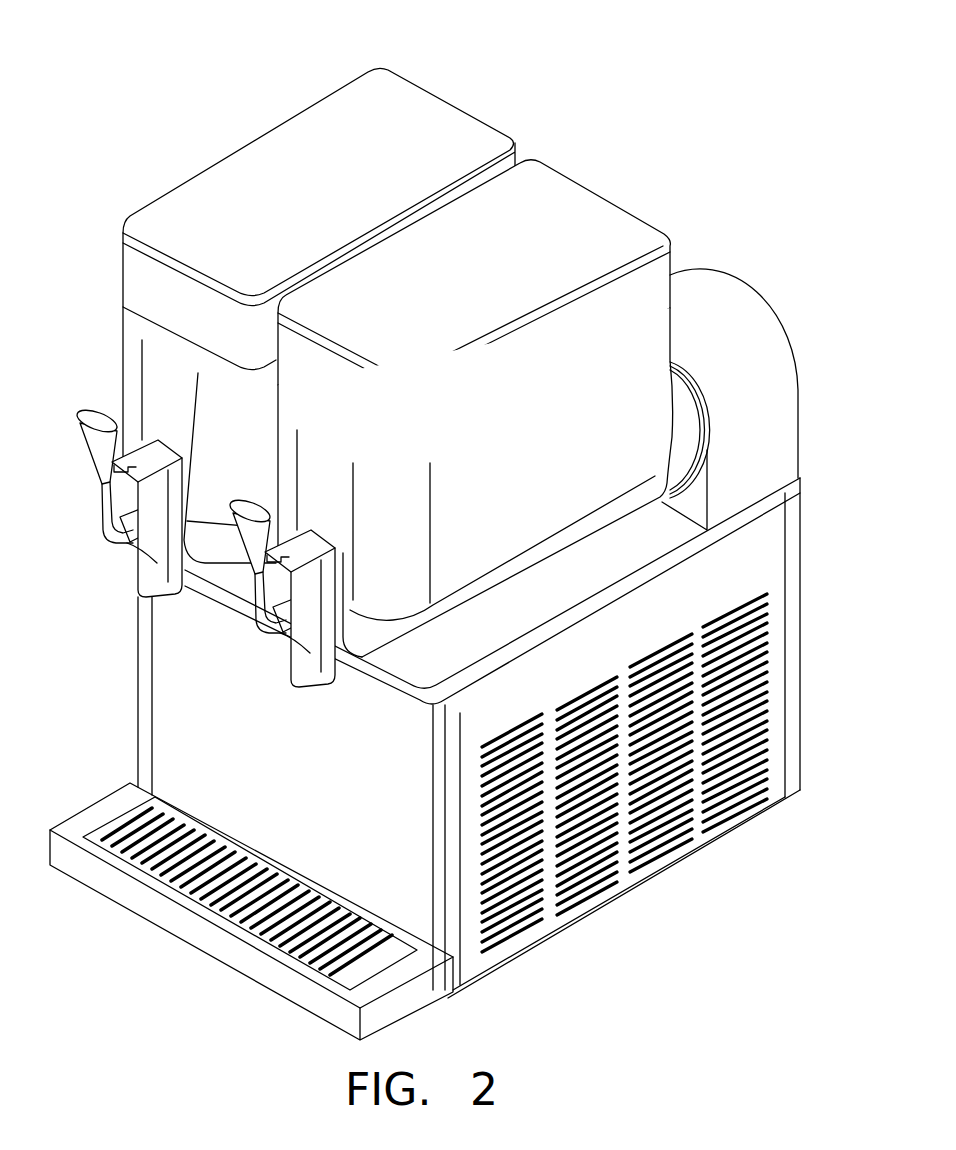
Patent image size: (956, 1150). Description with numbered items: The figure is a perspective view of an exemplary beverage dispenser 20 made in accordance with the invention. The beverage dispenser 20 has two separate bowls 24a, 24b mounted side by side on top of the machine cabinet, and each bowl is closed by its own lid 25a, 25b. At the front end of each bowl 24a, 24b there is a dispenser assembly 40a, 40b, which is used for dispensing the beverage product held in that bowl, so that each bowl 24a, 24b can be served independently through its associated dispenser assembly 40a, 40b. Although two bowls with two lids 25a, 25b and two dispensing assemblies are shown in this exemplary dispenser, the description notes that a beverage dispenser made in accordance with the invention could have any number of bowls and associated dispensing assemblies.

The beverage dispenser 20 is at (143, 100).
The bowl 24a is at (648, 355).
The bowl 24b is at (155, 388).
The lid 25a is at (597, 222).
The lid 25b is at (453, 126).
The dispenser assembly 40a is at (300, 663).
The dispenser assembly 40b is at (150, 580).